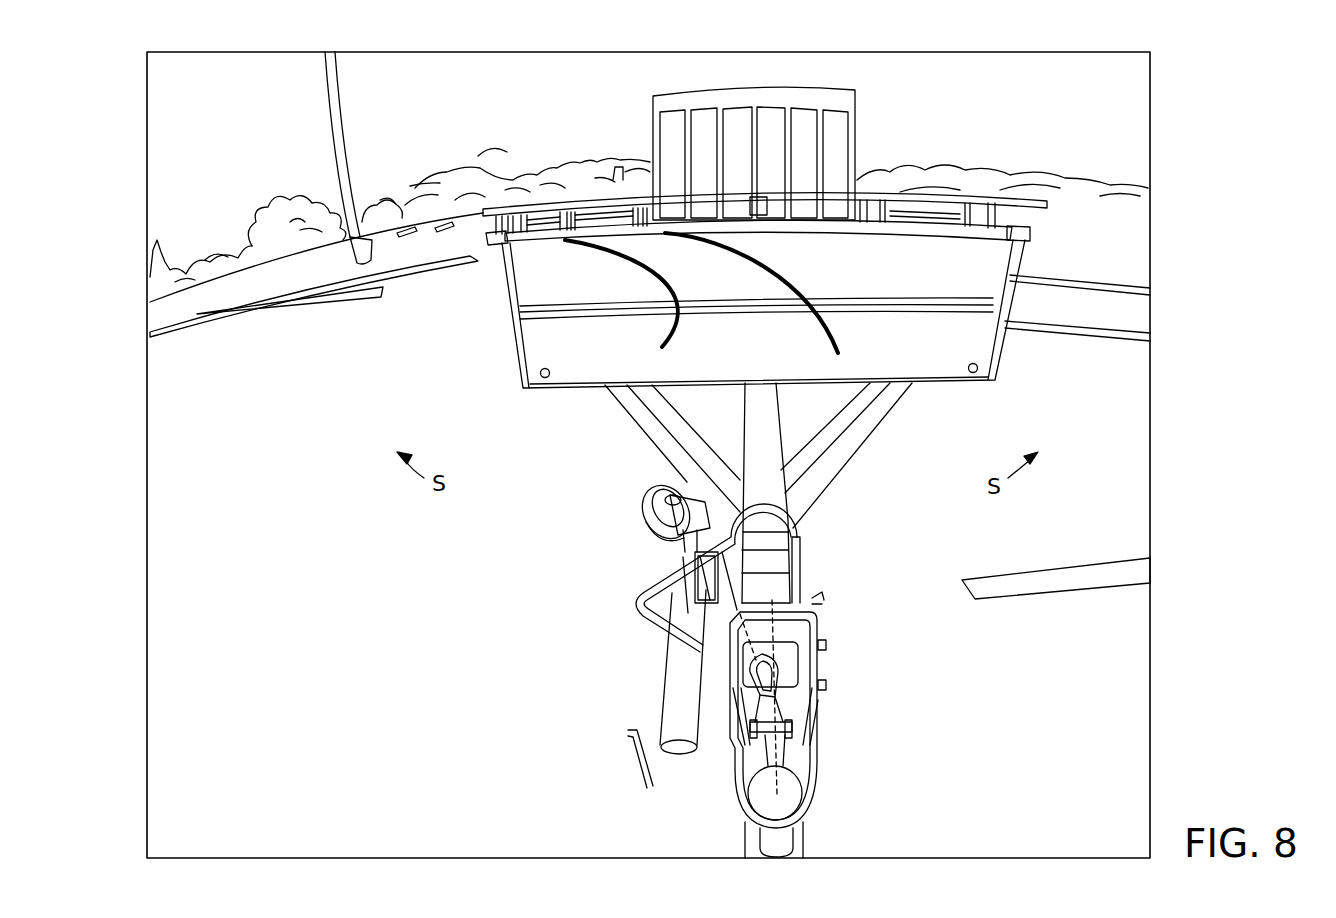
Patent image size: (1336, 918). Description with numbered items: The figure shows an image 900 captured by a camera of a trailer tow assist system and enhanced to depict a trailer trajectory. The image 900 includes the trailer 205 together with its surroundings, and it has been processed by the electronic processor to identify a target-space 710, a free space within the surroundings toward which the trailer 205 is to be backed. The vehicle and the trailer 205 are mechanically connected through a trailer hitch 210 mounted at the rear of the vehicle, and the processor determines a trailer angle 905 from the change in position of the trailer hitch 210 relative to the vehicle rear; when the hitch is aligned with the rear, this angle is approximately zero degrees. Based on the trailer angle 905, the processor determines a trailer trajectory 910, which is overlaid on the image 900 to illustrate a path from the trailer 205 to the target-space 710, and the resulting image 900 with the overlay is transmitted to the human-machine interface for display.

The image 900 is at (128, 75).
The target-space 710 is at (430, 247).
The trailer 205 is at (1003, 288).
The trailer trajectory 910 is at (670, 343).
The trailer angle 905 is at (735, 697).
The trailer hitch 210 is at (797, 705).